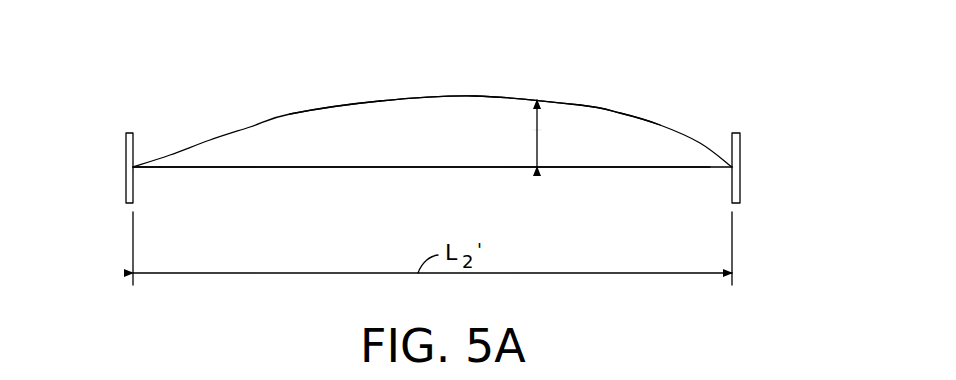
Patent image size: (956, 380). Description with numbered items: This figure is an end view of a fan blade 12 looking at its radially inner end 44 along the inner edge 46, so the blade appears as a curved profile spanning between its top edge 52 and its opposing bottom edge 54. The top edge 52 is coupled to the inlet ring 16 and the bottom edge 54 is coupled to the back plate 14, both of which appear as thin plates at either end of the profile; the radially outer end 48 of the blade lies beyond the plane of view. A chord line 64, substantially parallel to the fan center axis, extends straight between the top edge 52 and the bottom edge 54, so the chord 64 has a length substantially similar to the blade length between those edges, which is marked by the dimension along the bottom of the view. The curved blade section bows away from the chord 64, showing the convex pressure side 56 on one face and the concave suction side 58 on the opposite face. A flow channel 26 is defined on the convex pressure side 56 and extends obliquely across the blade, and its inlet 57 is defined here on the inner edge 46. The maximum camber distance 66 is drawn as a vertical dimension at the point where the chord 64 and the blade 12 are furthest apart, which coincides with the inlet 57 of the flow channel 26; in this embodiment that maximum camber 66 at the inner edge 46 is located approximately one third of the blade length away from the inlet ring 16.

The fan blade 12 is at (195, 92).
The back plate 14 is at (126, 142).
The inlet ring 16 is at (740, 142).
The flow channel 26 is at (520, 113).
The radially inner end 44 is at (683, 112).
The inner edge 46 is at (337, 106).
The radially outer end 48 is at (165, 177).
The top edge 52 is at (732, 168).
The bottom edge 54 is at (137, 168).
The convex pressure side 56 is at (449, 97).
The inlet 57 is at (550, 100).
The concave suction side 58 is at (622, 113).
The chord line 64 is at (286, 170).
The maximum camber distance 66 is at (540, 135).